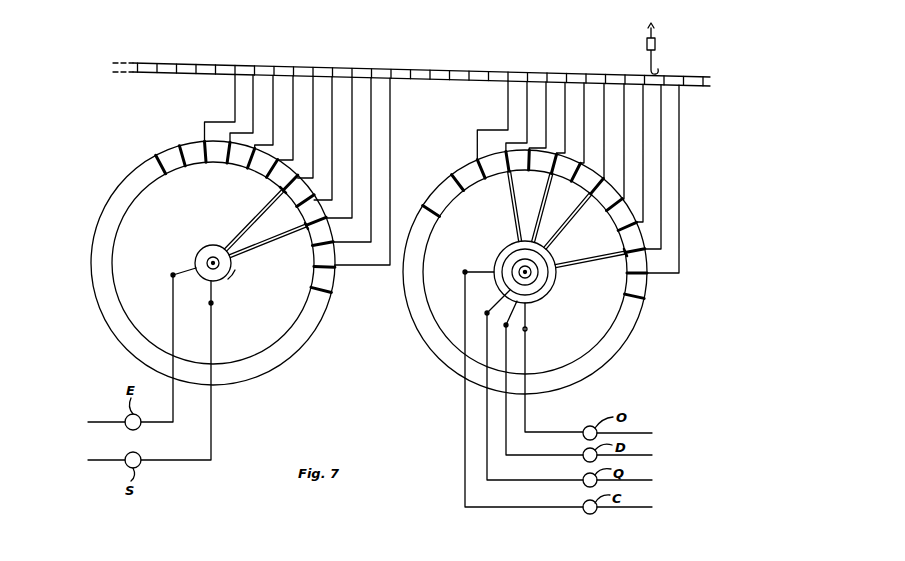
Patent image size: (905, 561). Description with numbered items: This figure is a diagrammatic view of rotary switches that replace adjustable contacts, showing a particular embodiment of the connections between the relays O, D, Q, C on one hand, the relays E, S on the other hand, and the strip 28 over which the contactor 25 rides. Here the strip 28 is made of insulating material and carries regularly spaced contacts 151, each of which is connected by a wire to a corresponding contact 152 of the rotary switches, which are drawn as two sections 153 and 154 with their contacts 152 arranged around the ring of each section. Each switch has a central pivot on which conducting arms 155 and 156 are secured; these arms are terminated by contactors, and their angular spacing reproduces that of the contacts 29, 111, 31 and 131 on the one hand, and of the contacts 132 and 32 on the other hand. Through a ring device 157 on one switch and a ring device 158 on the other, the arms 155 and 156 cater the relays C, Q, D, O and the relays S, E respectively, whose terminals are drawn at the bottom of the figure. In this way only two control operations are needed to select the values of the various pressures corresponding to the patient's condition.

The contacts 151 is at (278, 63).
The strip 28 is at (427, 75).
The contactor 25 is at (657, 44).
The contact 152 is at (206, 164).
The switch section 154 is at (318, 316).
The switch section 153 is at (633, 318).
The conducting arms 156 is at (241, 234).
The conducting arms 155 is at (518, 230).
The contact 32 is at (282, 194).
The contact 132 is at (307, 229).
The ring device 158 is at (228, 277).
The ring device 157 is at (545, 297).
The contact 131 is at (486, 181).
The contact 31 is at (552, 176).
The contact 111 is at (590, 197).
The contact 29 is at (625, 251).